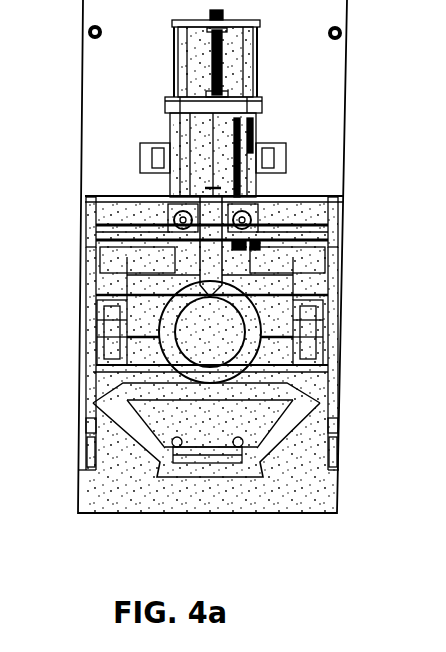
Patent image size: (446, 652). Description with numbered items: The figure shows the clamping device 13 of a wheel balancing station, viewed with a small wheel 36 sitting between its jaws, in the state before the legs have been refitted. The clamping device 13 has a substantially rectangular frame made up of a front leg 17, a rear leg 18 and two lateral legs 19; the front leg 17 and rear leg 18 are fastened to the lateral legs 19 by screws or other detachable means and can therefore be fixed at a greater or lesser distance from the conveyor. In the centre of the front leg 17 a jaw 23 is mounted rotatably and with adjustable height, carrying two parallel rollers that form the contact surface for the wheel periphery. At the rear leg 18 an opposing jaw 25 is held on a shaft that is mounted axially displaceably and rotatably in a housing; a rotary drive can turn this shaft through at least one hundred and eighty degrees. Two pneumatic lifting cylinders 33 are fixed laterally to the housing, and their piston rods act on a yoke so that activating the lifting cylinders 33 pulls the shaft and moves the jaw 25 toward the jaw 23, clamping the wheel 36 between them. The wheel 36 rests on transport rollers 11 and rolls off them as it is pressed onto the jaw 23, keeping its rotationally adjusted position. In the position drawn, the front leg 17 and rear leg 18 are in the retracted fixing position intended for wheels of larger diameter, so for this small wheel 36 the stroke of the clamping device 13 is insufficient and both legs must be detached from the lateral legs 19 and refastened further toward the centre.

The transport roller 11 is at (322, 396).
The clamping device 13 is at (310, 190).
The front leg 17 is at (130, 447).
The rear leg 18 is at (107, 203).
The lateral legs 19 is at (82, 284).
The jaw 23 is at (205, 444).
The jaw 25 is at (258, 197).
The pneumatic lifting cylinder 33 is at (168, 135).
The wheel 36 is at (228, 349).